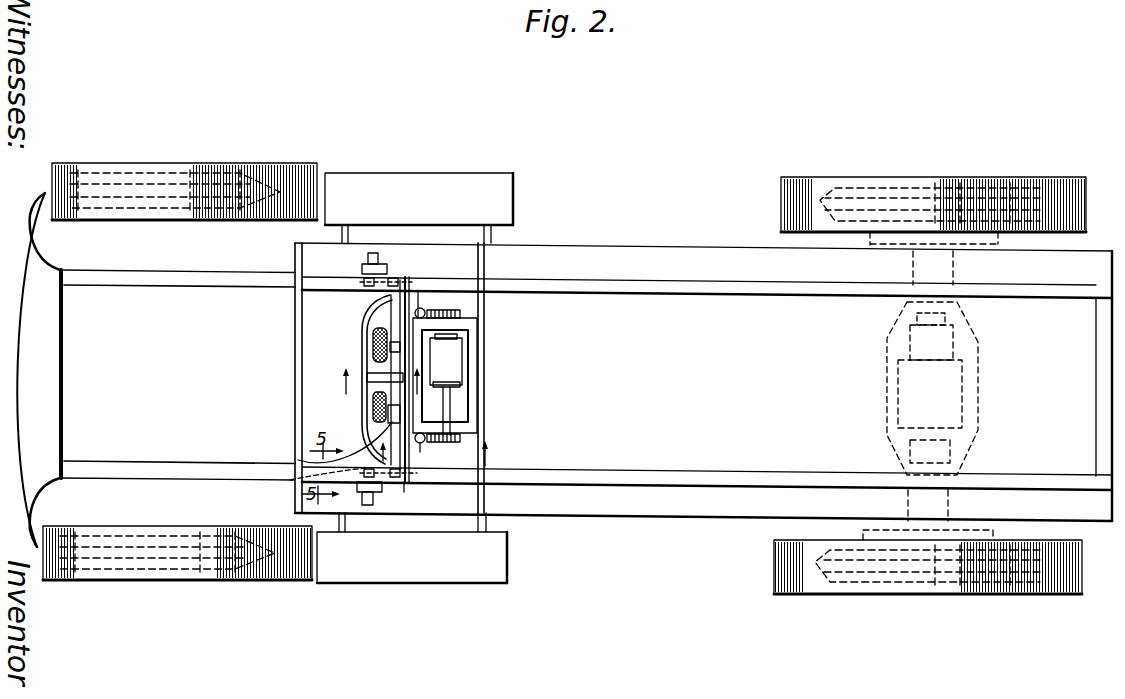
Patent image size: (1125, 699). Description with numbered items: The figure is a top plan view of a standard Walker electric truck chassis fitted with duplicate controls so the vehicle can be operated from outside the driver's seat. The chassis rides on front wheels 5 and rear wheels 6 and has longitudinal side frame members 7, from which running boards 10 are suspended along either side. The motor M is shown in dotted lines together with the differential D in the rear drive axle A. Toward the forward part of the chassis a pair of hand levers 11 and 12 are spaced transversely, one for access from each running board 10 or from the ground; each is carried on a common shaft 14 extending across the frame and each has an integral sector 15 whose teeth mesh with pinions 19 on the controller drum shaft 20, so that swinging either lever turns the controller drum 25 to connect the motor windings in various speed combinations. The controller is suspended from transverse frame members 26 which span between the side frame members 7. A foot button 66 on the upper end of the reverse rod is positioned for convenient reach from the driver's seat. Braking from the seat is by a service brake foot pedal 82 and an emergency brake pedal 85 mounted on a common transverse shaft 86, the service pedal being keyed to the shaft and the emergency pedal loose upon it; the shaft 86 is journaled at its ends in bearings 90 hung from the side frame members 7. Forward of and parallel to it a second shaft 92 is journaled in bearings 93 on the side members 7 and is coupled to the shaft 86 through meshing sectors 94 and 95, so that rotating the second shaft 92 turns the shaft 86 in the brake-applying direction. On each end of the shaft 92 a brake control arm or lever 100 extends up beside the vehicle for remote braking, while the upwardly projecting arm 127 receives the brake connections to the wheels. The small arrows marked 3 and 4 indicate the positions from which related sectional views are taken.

The section line arrow 3 is at (339, 383).
The section line arrow 4 is at (441, 455).
The front wheels 5 is at (216, 190).
The rear wheels 6 is at (982, 195).
The side frame members 7 is at (735, 290).
The running boards 10 is at (512, 188).
The hand lever 11 is at (426, 312).
The hand lever 12 is at (433, 440).
The common shaft 14 is at (466, 345).
The integral sector 15 is at (420, 445).
The pinions 19 is at (432, 313).
The controller drum shaft 20 is at (450, 336).
The controller drum 25 is at (455, 367).
The transverse frame members 26 is at (418, 292).
The foot button 66 is at (428, 388).
The service brake foot pedal 82 is at (378, 338).
The emergency brake pedal 85 is at (377, 412).
The common transverse shaft 86 is at (404, 290).
The bearings 90 is at (402, 280).
The second shaft 92 is at (365, 310).
The bearings 93 is at (305, 377).
The sector 94 is at (372, 376).
The sector 95 is at (400, 372).
The brake control arm or lever 100 is at (366, 254).
The upwardly projecting arm 127 is at (298, 460).
The rear drive axle A is at (968, 349).
The motor M is at (948, 385).
The differential D is at (968, 446).